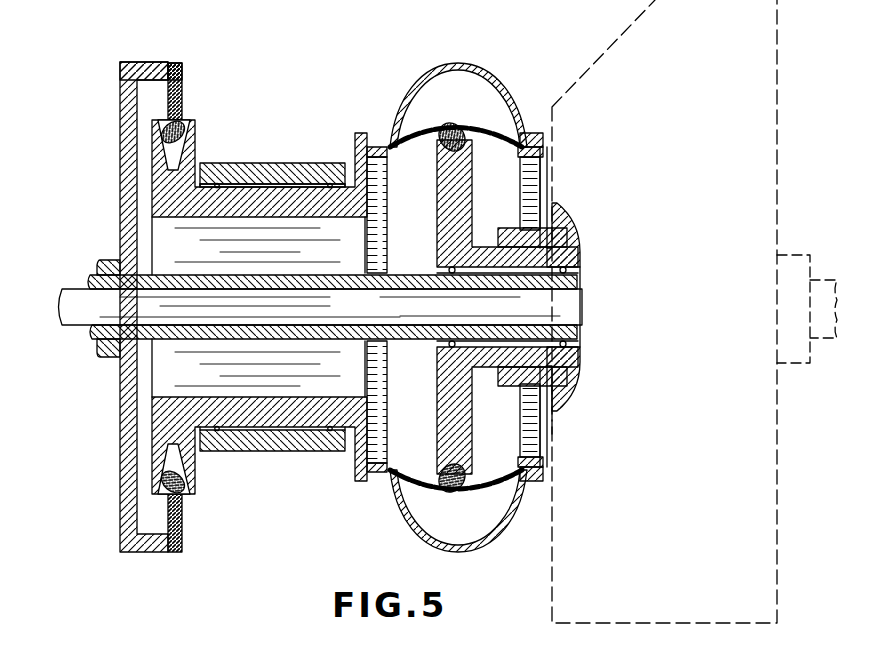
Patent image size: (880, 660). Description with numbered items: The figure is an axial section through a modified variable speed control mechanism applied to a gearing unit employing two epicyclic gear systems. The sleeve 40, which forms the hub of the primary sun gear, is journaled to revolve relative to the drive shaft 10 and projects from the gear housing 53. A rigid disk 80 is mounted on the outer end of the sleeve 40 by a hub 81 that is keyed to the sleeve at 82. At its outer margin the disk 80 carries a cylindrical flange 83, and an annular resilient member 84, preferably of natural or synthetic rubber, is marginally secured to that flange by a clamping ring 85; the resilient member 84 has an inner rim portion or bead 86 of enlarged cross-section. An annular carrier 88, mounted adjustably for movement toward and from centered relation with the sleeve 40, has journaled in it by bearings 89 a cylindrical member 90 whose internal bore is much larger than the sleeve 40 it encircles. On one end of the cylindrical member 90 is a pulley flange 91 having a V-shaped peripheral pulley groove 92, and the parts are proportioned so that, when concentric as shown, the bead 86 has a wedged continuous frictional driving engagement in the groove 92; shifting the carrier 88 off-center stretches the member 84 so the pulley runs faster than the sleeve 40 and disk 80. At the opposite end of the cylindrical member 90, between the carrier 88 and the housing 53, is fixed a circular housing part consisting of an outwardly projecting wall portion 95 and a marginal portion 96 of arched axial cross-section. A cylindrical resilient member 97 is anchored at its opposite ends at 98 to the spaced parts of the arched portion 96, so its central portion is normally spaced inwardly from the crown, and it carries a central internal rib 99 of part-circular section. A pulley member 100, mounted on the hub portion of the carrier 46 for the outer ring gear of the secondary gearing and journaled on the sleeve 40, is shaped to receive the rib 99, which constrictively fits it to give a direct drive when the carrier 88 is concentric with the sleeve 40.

The drive shaft 10 is at (80, 318).
The sleeve 40 is at (86, 280).
The carrier 46 is at (553, 214).
The gear housing 53 is at (622, 38).
The rigid disk 80 is at (128, 152).
The hub 81 is at (112, 348).
The key 82 is at (115, 265).
The cylindrical flange 83 is at (150, 70).
The annular resilient member 84 is at (178, 105).
The clamping ring 85 is at (182, 70).
The bead 86 is at (188, 132).
The annular carrier 88 is at (268, 170).
The bearings 89 is at (218, 184).
The cylindrical member 90 is at (310, 190).
The pulley flange 91 is at (192, 438).
The pulley groove 92 is at (195, 485).
The wall portion 95 is at (362, 462).
The marginal portion 96 is at (478, 70).
The cylindrical resilient member 97 is at (423, 125).
The anchoring points 98 is at (382, 160).
The rib 99 is at (440, 492).
The pulley member 100 is at (445, 204).